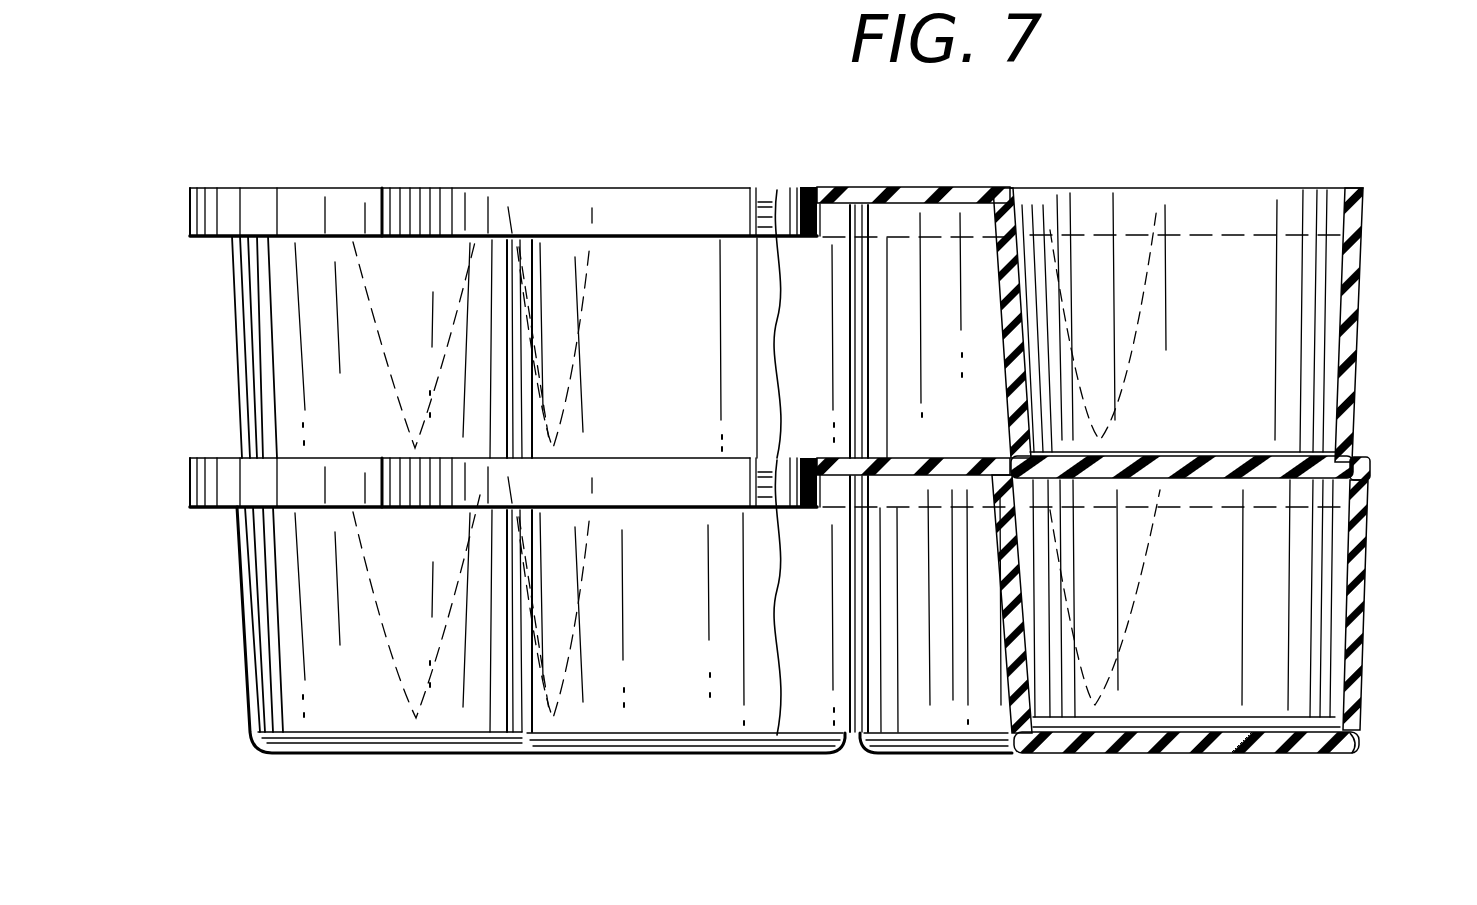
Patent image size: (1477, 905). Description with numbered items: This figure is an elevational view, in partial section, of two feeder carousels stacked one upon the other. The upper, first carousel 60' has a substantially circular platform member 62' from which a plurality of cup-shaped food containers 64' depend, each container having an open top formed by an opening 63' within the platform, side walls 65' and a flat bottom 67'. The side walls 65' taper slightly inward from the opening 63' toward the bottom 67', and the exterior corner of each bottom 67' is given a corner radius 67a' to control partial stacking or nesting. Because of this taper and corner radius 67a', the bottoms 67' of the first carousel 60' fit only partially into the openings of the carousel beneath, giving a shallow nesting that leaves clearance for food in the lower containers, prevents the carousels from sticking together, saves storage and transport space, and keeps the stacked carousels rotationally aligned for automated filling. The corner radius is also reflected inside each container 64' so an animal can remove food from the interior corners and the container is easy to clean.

The first carousel 60' is at (808, 305).
The platform member 62' is at (913, 168).
The opening 63' is at (1131, 305).
The food container 64' is at (1373, 321).
The side walls 65' is at (1387, 325).
The bottom 67' is at (1182, 423).
The corner radius 67a' is at (1412, 497).